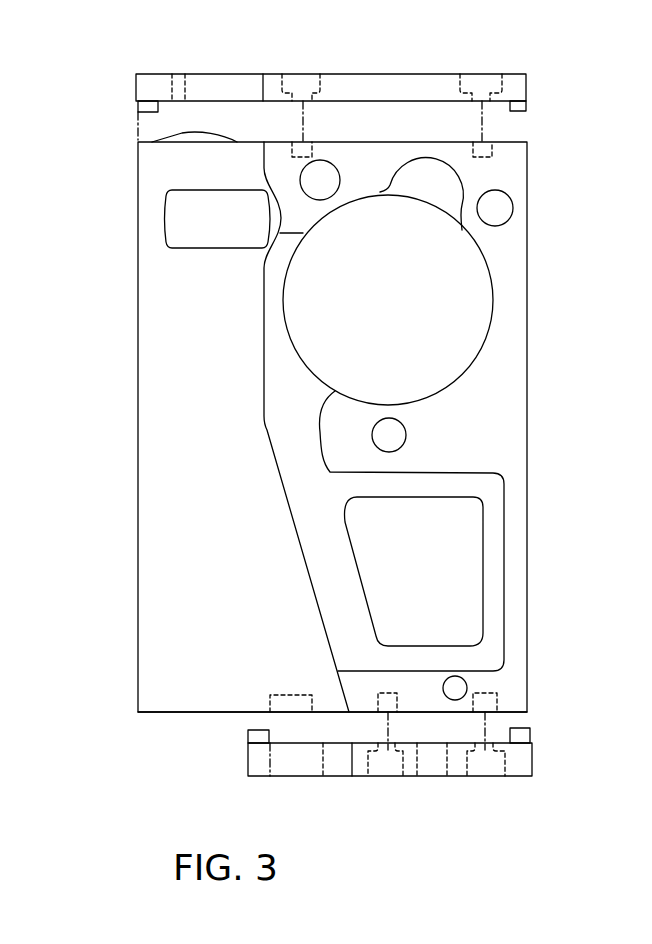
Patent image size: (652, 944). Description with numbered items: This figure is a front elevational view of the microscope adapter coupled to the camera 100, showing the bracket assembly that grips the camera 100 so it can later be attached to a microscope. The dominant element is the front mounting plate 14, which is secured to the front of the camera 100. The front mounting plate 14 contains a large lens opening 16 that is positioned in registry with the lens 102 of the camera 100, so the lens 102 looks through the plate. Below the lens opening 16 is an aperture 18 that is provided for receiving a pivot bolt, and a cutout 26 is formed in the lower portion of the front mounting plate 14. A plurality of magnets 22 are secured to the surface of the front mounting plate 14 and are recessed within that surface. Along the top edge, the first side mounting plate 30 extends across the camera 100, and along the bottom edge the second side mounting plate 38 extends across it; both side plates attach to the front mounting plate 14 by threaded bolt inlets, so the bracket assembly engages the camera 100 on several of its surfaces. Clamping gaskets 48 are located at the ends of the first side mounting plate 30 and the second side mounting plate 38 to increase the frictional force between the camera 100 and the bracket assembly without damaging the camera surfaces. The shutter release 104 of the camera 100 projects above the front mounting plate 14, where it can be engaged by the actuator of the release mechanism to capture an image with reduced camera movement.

The front mounting plate 14 is at (530, 329).
The lens opening 16 is at (472, 268).
The aperture 18 is at (406, 435).
The magnets 22 is at (507, 213).
The cutout 26 is at (480, 485).
The first side mounting plate 30 is at (401, 70).
The second side mounting plate 38 is at (364, 780).
The clamping gaskets 48 is at (526, 103).
The camera 100 is at (185, 713).
The lens 102 is at (423, 330).
The shutter release 104 is at (177, 130).